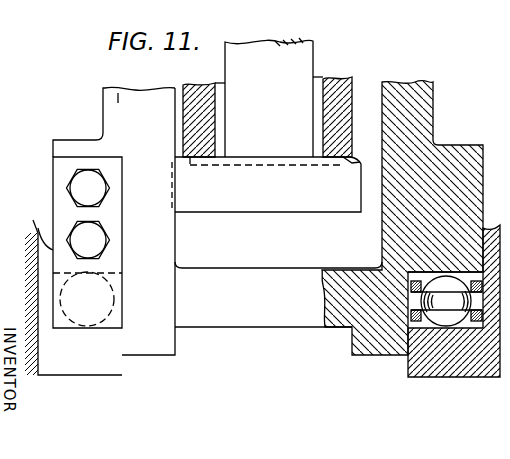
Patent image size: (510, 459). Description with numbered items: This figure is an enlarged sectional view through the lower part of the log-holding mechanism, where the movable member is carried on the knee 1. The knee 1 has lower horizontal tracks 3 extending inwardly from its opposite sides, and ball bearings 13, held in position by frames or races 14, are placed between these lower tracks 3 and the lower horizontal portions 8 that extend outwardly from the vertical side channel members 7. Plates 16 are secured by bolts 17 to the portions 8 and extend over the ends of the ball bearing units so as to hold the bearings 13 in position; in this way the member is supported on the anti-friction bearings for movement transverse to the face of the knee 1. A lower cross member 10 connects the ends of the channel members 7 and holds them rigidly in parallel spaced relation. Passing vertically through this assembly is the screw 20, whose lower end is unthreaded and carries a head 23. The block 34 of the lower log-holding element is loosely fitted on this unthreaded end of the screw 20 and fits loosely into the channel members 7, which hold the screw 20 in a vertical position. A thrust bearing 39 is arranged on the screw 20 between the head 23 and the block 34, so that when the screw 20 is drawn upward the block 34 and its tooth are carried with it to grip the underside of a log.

The knee 1 is at (428, 126).
The lower horizontal tracks 3 is at (88, 362).
The vertical side channel members 7 is at (118, 98).
The lower horizontal portions 8 is at (58, 146).
The lower cross member 10 is at (262, 318).
The ball bearings 13 is at (105, 299).
The frames or races 14 is at (410, 306).
The plates 16 is at (53, 208).
The bolts 17 is at (95, 237).
The vertical screw 20 is at (312, 63).
The head 23 is at (291, 213).
The block 34 is at (348, 88).
The thrust bearing 39 is at (357, 162).